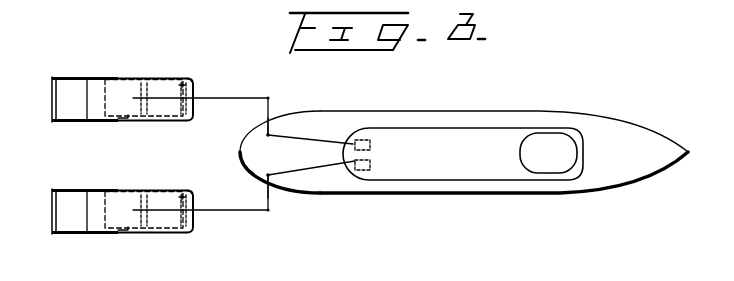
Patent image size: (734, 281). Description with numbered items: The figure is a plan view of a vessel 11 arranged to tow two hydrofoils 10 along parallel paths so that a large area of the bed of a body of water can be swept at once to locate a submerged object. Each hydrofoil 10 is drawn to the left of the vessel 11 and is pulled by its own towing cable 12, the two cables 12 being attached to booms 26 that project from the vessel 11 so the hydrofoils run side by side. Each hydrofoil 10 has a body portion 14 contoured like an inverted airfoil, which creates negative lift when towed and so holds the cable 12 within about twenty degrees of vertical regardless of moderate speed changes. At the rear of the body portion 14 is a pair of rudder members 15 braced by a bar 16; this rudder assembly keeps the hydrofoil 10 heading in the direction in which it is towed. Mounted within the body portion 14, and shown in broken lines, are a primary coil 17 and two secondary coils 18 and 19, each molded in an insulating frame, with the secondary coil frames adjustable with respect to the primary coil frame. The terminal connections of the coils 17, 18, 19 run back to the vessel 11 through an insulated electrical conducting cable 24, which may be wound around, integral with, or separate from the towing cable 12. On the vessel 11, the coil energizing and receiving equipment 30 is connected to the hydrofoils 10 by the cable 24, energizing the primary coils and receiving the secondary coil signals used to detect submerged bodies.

The hydrofoil 10 is at (155, 77).
The vessel 11 is at (473, 110).
The cable 12 is at (246, 98).
The body portion 14 is at (97, 115).
The rudder members 15 is at (75, 76).
The bar 16 is at (53, 104).
The primary coil 17 is at (125, 121).
The secondary coil 18 is at (195, 78).
The secondary coil 19 is at (194, 109).
The electrical conducting cable 24 is at (157, 97).
The booms 26 is at (272, 118).
The coil energizing and receiving equipment 30 is at (372, 143).